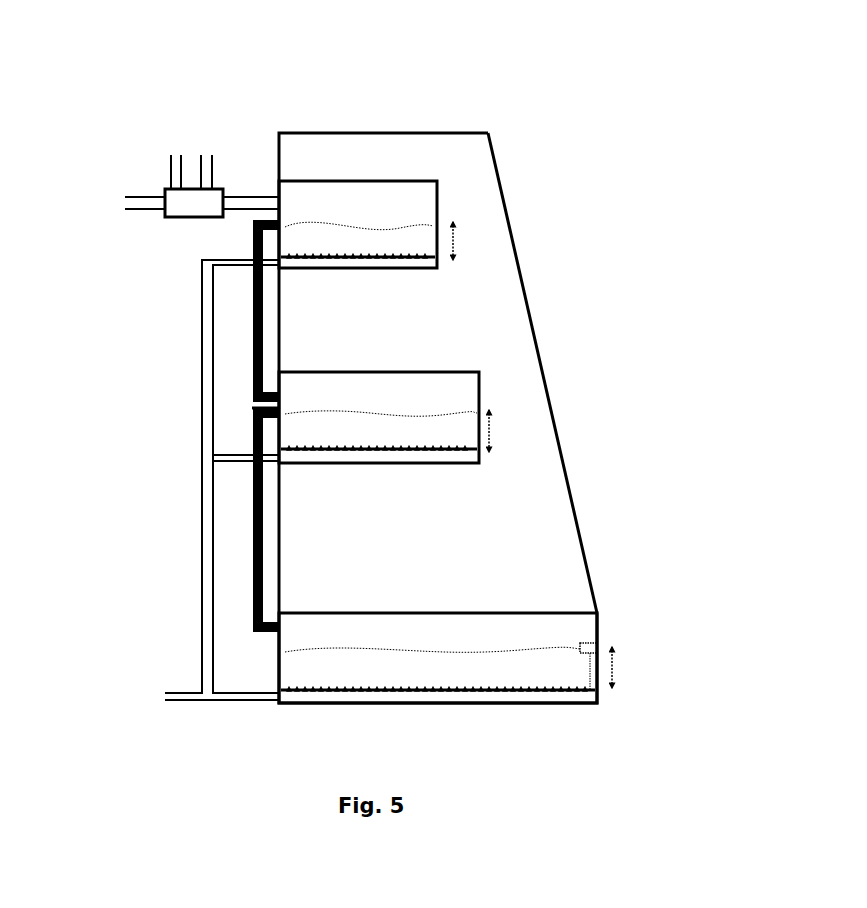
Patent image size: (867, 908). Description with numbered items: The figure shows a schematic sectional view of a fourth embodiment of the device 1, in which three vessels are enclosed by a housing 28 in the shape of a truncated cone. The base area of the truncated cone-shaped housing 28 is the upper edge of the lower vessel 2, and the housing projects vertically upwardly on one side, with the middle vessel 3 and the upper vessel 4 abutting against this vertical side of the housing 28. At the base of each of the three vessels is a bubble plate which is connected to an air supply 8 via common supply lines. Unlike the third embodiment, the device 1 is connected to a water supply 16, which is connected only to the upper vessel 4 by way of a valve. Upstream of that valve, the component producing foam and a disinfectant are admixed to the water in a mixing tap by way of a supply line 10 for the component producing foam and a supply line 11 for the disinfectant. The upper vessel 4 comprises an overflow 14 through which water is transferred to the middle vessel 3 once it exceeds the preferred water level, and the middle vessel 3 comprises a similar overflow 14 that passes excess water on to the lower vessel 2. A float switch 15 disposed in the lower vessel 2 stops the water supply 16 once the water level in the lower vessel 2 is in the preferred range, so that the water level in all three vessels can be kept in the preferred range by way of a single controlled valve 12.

The device 1 is at (636, 255).
The lower vessel 2 is at (540, 610).
The middle vessel 3 is at (485, 385).
The upper vessel 4 is at (450, 190).
The air supply 8 is at (158, 697).
The supply line for the component producing foam 10 is at (168, 158).
The supply line for disinfectant 11 is at (213, 160).
The controlled valve 12 is at (287, 198).
The overflow 14 is at (241, 223).
The float switch 15 is at (606, 649).
The water supply 16 is at (119, 202).
The housing 28 is at (508, 203).